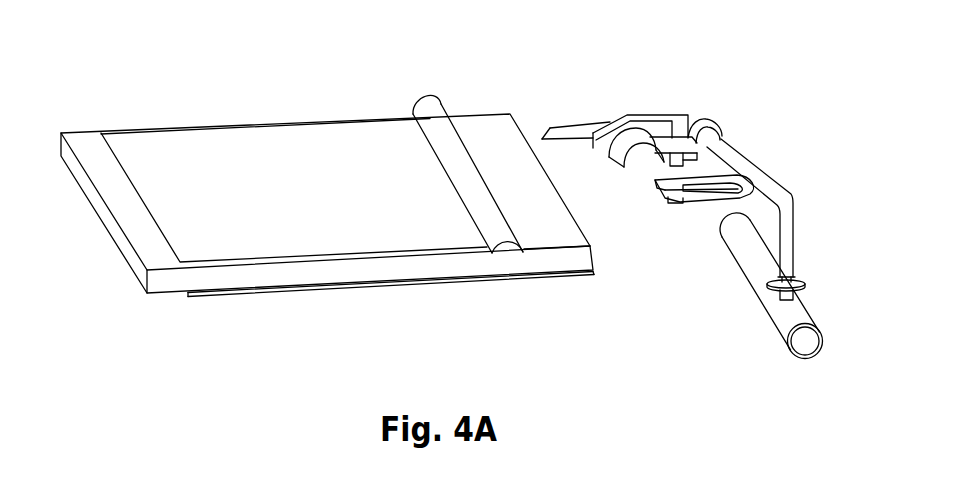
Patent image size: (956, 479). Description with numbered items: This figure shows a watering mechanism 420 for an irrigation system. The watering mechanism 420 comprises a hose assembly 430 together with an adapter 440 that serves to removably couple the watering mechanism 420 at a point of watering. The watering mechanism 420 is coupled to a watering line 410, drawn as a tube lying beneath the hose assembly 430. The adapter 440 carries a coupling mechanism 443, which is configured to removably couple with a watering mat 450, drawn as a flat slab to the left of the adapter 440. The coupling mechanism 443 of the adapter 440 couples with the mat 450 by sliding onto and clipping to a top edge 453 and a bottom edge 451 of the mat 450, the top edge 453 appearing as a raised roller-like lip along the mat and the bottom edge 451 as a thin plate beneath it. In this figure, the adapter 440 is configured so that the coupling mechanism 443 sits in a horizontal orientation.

The watering line 410 is at (750, 270).
The watering mechanism 420 is at (790, 155).
The hose assembly 430 is at (797, 192).
The adapter 440 is at (693, 120).
The coupling mechanism 443 is at (650, 172).
The watering mat 450 is at (302, 312).
The bottom edge 451 is at (547, 275).
The top edge 453 is at (475, 125).